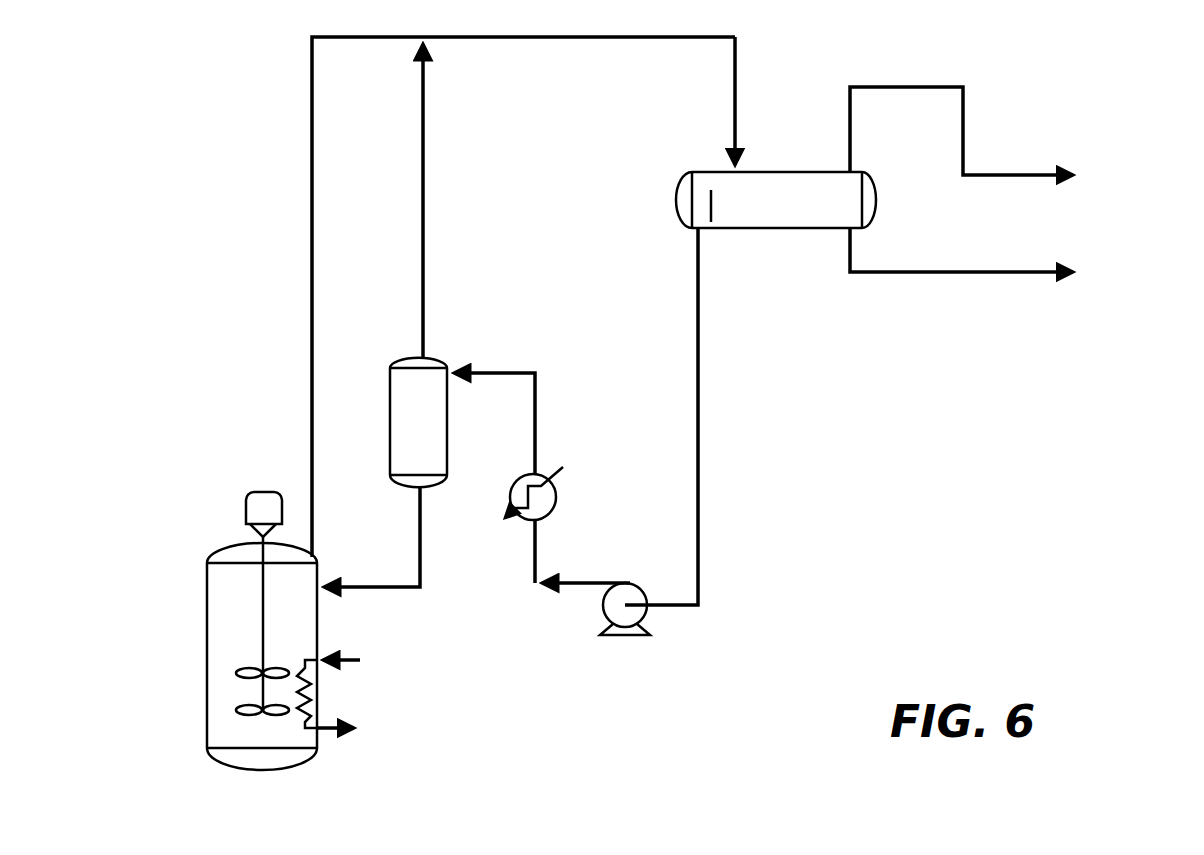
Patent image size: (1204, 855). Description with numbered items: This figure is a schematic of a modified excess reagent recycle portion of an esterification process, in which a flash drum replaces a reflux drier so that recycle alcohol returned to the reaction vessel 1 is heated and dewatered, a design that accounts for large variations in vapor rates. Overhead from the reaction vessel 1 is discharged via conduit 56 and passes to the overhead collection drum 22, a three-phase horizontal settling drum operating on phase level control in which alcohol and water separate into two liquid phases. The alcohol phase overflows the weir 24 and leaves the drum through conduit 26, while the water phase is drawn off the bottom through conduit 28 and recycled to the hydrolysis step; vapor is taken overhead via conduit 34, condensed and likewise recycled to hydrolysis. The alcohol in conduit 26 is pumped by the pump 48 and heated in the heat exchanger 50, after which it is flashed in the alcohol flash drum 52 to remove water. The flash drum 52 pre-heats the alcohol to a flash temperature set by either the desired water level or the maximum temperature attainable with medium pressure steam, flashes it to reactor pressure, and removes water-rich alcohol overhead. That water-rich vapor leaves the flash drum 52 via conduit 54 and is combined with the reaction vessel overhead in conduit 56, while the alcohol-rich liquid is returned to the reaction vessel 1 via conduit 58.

The reaction vessel 1 is at (207, 590).
The overhead collection drum 22 is at (677, 202).
The weir 24 is at (711, 211).
The conduit 26 is at (700, 310).
The conduit 28 is at (920, 272).
The conduit 34 is at (1020, 172).
The pump 48 is at (630, 583).
The heat exchanger 50 is at (556, 497).
The alcohol flash drum 52 is at (447, 453).
The conduit 54 is at (423, 141).
The conduit 56 is at (312, 256).
The conduit 58 is at (420, 562).